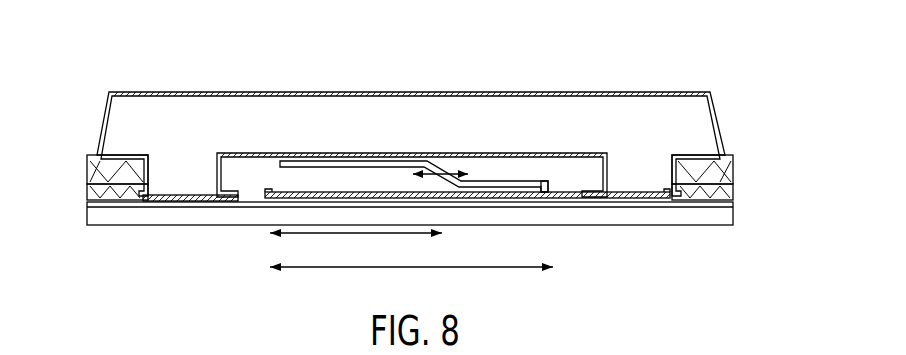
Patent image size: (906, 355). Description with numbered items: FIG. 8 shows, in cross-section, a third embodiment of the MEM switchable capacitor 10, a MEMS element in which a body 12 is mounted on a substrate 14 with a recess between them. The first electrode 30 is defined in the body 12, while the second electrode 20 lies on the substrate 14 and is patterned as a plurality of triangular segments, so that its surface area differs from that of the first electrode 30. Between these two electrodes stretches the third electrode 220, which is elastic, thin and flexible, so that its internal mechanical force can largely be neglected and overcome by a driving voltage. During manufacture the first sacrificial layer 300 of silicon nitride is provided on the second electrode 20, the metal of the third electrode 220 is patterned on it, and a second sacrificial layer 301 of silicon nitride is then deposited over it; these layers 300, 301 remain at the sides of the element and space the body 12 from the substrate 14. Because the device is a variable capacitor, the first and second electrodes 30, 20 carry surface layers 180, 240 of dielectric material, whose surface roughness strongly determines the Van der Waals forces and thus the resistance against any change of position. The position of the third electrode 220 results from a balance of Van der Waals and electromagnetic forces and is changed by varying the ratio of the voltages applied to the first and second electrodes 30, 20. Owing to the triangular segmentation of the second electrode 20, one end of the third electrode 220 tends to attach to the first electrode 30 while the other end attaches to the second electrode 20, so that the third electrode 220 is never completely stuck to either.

The MEM switchable capacitor 10 is at (146, 55).
The body 12 is at (118, 129).
The substrate 14 is at (97, 216).
The second electrode 20 is at (283, 199).
The first electrode 30 is at (314, 118).
The surface layer 180 is at (501, 160).
The third electrode 220 is at (397, 160).
The surface layer 240 is at (549, 187).
The first sacrificial layer 300 is at (97, 188).
The second sacrificial layer 301 is at (97, 171).